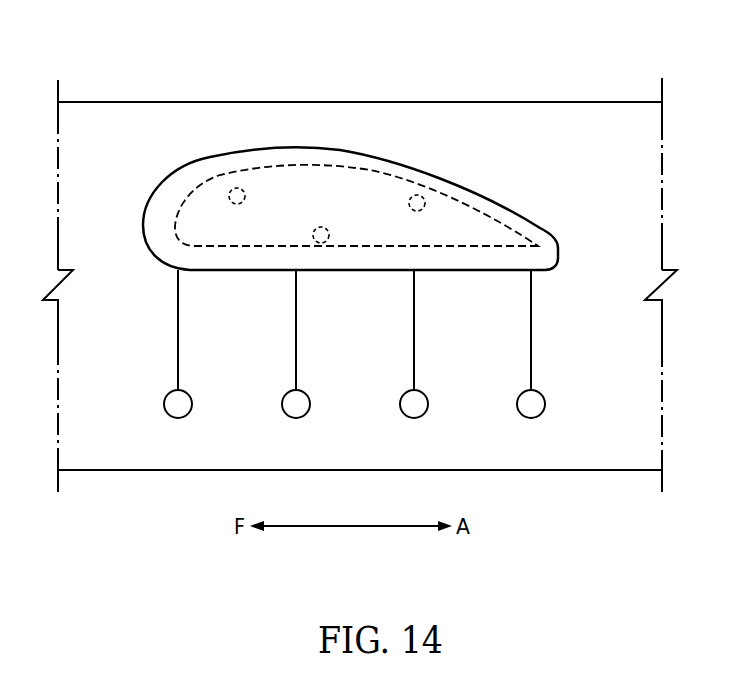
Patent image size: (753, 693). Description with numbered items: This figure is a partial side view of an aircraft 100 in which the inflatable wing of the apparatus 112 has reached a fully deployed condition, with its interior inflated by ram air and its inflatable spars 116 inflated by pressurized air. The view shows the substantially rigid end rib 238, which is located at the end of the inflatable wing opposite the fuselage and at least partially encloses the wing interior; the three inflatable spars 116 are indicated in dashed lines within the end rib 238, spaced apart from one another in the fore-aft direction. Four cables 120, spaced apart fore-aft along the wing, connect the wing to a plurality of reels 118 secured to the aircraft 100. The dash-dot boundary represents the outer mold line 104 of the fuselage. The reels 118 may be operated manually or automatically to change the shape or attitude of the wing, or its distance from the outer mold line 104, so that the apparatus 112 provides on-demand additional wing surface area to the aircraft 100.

The aircraft 100 is at (576, 71).
The outer mold line 104 is at (623, 260).
The apparatus 112 is at (439, 301).
The inflatable spar 116 is at (313, 234).
The reel 118 is at (164, 404).
The cable 120 is at (177, 331).
The end rib 238 is at (482, 182).